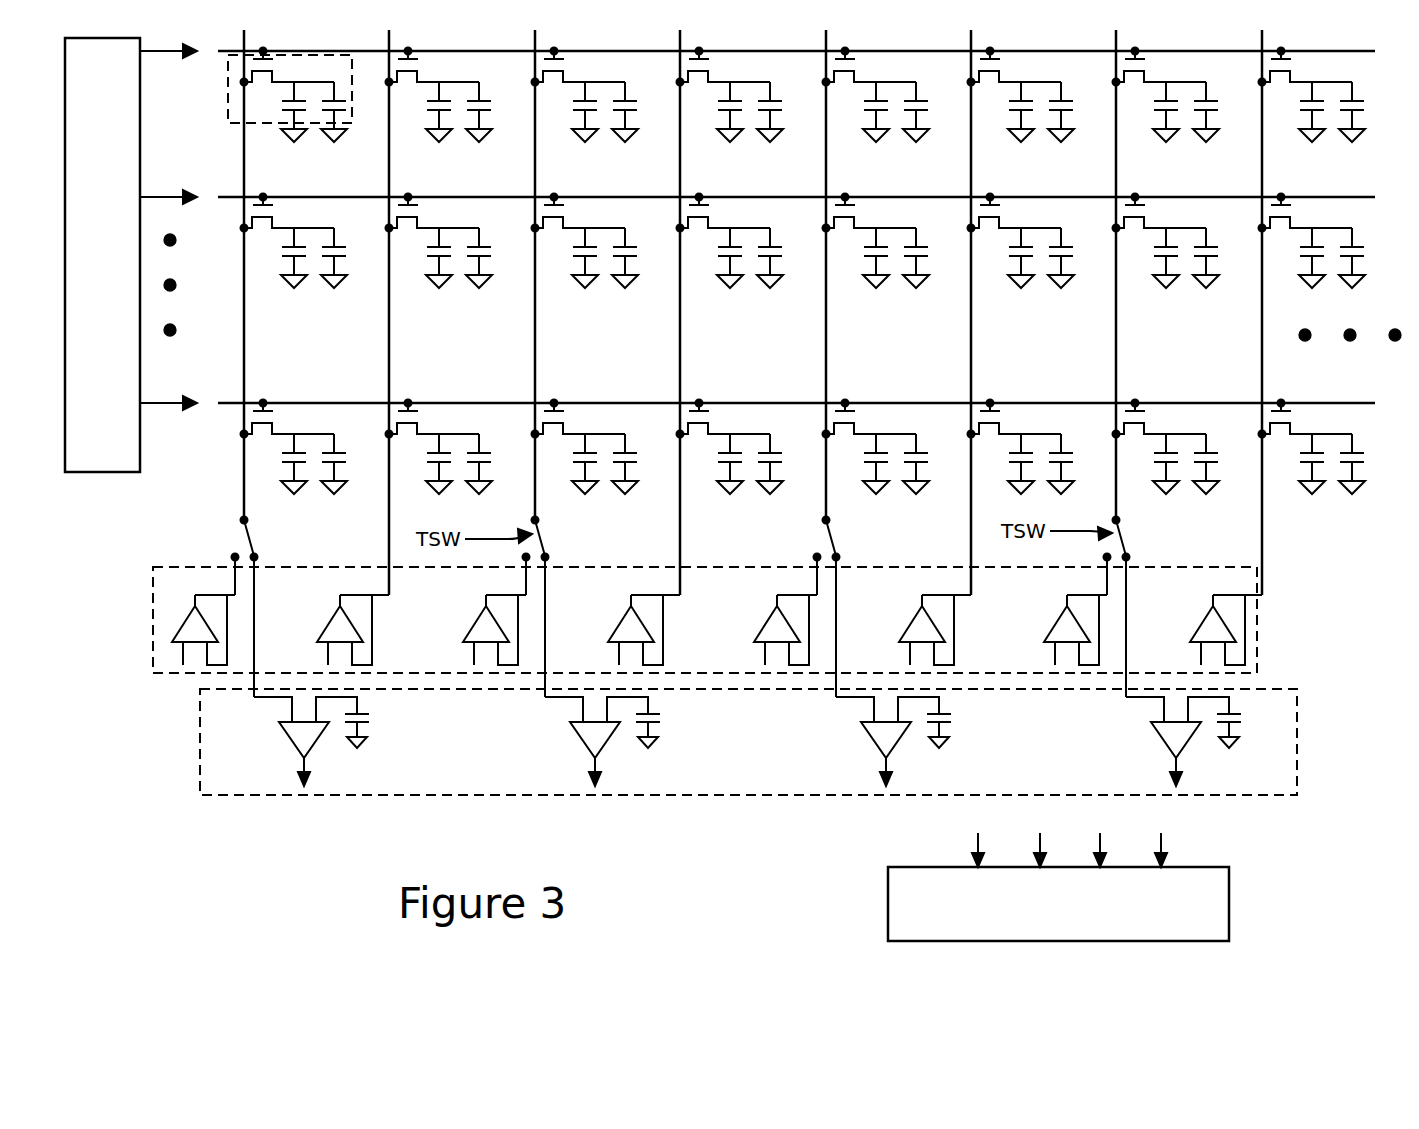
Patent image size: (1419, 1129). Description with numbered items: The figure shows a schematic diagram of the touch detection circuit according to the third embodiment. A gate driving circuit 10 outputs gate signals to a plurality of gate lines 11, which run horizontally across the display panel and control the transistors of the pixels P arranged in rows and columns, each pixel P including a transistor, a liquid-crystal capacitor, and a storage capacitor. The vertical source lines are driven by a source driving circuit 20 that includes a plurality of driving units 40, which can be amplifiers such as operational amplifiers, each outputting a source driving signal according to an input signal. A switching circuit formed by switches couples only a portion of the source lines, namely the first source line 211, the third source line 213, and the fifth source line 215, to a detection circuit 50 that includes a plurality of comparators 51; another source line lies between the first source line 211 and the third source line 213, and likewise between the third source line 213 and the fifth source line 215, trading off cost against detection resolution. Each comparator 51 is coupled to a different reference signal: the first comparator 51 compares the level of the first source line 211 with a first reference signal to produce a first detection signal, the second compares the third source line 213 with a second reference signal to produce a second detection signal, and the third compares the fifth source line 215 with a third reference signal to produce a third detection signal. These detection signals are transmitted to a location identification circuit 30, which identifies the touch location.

The gate driving circuit 10 is at (115, 472).
The gate line 11 is at (305, 190).
The source driving circuit 20 is at (1185, 565).
The location identification circuit 30 is at (1229, 893).
The driving unit 40 is at (190, 620).
The detection circuit 50 is at (248, 795).
The comparator 51 is at (283, 728).
The Mth source line 211 is at (244, 320).
The Nth source line 213 is at (535, 320).
The Pth source line 215 is at (826, 320).
The pixel P is at (233, 110).